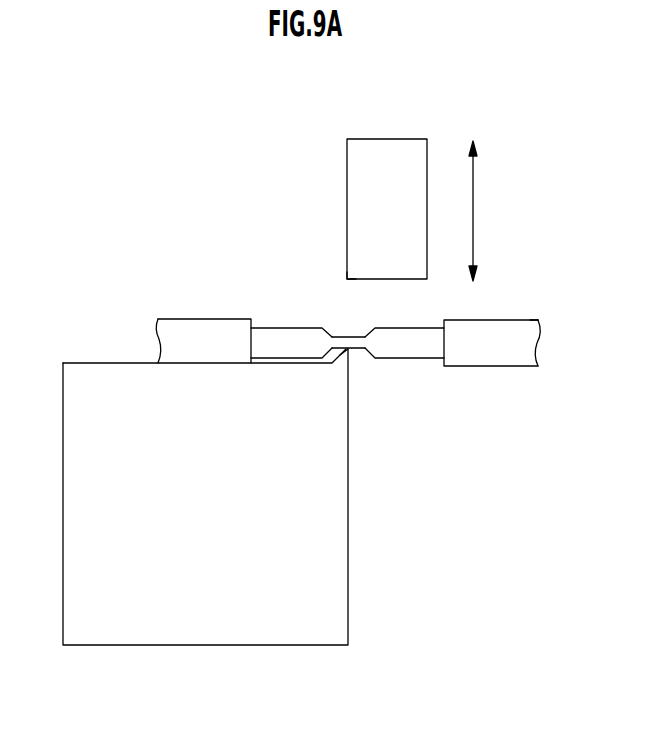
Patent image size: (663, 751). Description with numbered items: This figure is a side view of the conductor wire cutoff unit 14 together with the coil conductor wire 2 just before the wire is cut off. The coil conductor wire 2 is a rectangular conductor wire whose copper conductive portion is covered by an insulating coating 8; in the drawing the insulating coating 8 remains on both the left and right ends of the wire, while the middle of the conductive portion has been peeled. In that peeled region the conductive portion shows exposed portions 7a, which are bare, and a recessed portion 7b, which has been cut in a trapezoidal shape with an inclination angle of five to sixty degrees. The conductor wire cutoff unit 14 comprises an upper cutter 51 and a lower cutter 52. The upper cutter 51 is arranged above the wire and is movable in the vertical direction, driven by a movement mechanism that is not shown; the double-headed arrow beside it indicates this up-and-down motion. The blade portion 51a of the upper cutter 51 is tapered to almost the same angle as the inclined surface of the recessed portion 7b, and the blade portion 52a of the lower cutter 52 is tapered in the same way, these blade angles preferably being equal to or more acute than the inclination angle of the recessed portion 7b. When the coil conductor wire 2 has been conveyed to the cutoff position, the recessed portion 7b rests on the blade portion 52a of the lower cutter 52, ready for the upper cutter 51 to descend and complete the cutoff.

The coil conductor wire 2 is at (527, 318).
The exposed portion 7a is at (268, 328).
The recessed portion 7b is at (340, 337).
The insulating coating 8 is at (200, 319).
The conductor wire cutoff unit 14 is at (308, 222).
The upper cutter 51 is at (386, 160).
The blade portion 51a is at (350, 280).
The lower cutter 52 is at (187, 627).
The blade portion 52a is at (349, 352).